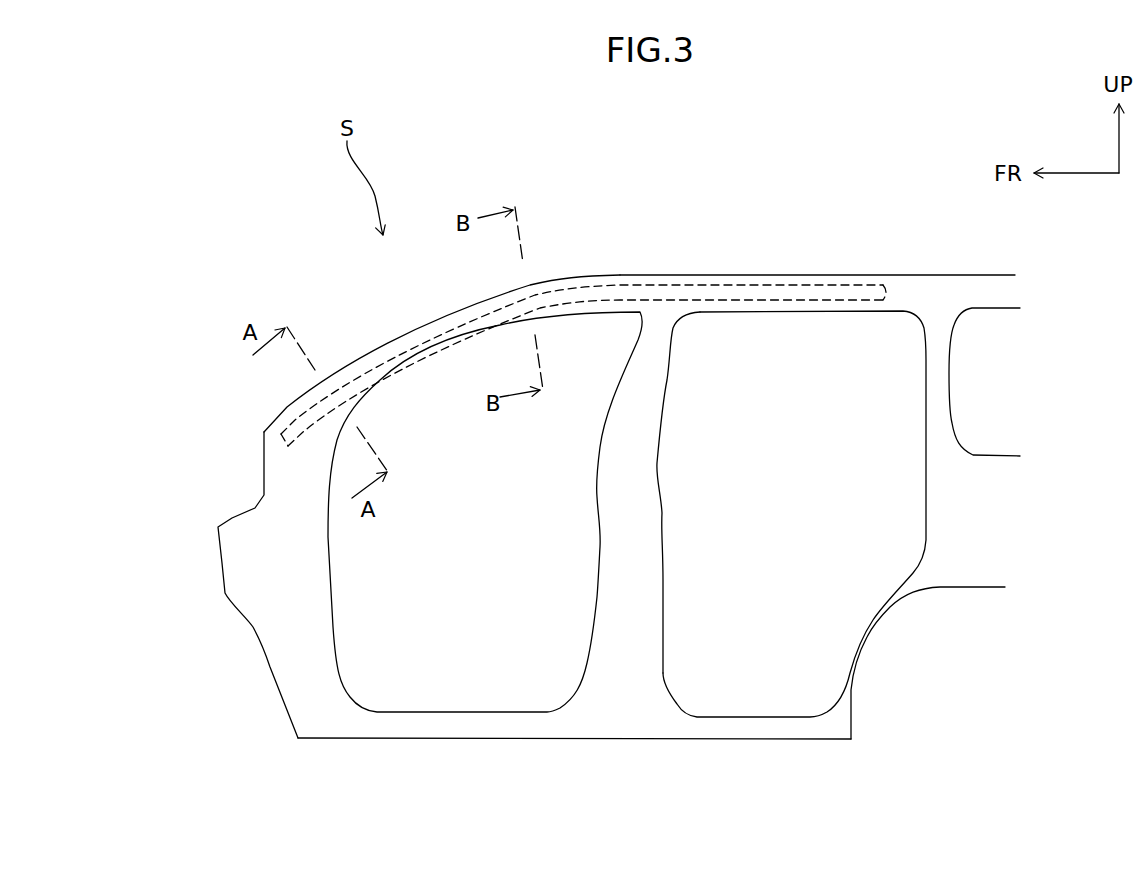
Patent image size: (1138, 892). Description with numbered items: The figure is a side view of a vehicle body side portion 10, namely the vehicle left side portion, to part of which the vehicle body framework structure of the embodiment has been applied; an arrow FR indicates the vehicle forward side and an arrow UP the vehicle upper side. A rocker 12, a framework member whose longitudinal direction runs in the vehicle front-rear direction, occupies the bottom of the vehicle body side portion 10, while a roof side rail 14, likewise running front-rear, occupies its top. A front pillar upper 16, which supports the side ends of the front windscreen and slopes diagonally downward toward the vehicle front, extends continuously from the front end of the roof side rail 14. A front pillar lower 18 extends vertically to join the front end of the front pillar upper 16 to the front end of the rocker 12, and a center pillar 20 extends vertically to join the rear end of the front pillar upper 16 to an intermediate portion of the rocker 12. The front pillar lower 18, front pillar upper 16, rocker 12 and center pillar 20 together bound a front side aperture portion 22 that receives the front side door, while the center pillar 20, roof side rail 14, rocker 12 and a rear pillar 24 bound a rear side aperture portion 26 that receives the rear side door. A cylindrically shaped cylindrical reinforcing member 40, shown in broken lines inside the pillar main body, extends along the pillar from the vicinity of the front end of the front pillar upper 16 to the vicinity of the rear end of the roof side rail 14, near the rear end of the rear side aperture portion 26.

The vehicle body side portion 10 is at (317, 155).
The rocker 12 is at (458, 730).
The roof side rail 14 is at (778, 277).
The front pillar upper 16 is at (373, 347).
The front pillar lower 18 is at (282, 663).
The center pillar 20 is at (657, 551).
The front side aperture portion 22 is at (481, 518).
The rear pillar 24 is at (933, 470).
The rear side aperture portion 26 is at (786, 484).
The cylindrical reinforcing member 40 is at (572, 288).